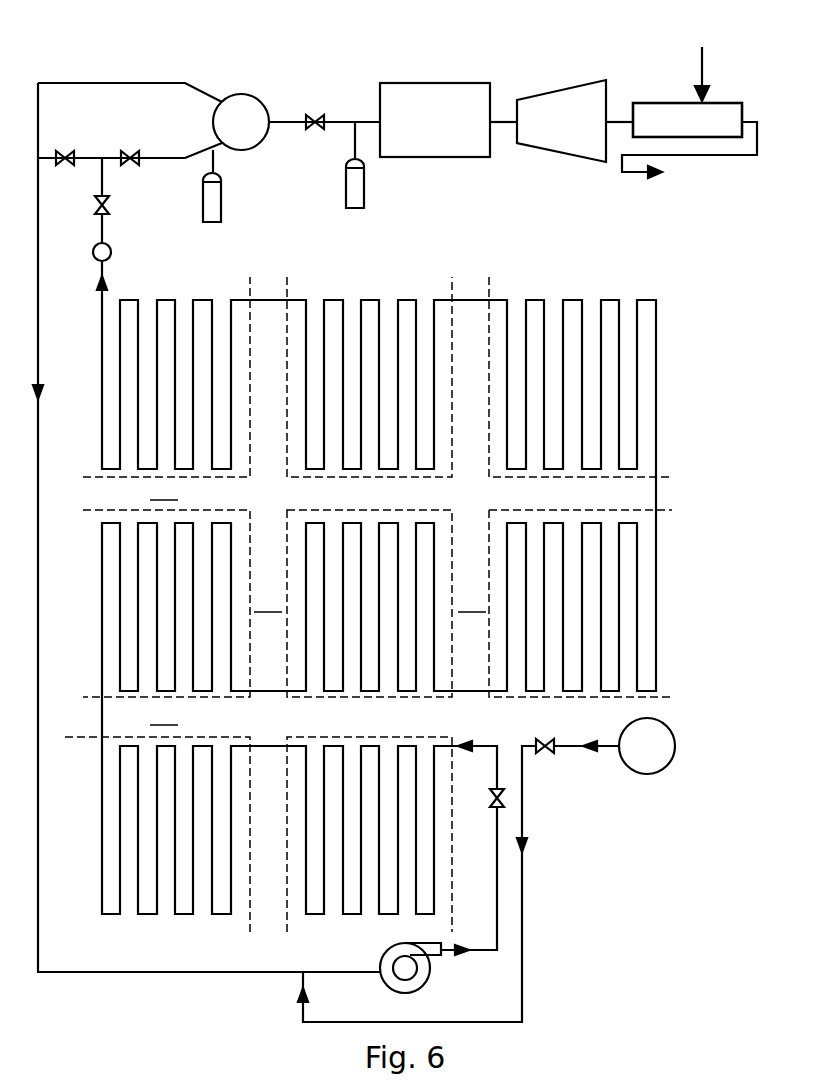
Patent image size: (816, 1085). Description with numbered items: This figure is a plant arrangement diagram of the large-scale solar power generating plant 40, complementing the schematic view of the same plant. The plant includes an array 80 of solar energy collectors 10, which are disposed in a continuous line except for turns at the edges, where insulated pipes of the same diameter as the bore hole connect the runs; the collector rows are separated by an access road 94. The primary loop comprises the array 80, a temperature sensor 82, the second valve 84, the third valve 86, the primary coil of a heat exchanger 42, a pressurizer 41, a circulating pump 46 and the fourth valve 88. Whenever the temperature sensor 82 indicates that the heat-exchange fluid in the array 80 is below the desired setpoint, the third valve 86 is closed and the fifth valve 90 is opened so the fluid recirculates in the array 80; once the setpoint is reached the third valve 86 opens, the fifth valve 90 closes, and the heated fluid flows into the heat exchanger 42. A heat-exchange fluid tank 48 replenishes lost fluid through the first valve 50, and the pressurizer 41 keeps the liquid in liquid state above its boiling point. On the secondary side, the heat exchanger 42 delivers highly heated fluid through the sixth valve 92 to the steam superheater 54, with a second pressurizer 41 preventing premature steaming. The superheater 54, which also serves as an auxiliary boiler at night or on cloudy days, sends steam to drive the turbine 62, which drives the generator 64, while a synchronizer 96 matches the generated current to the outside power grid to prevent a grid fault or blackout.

The solar energy collector 10 is at (379, 588).
The array 80 is at (368, 577).
The access road 94 is at (318, 605).
The fifth valve 90 is at (84, 139).
The third valve 86 is at (149, 139).
The second valve 84 is at (133, 204).
The temperature sensor 82 is at (105, 268).
The heat exchanger 42 is at (260, 100).
The sixth valve 92 is at (302, 147).
The pressurizer 41 is at (297, 186).
The solar power generating plant 40 is at (530, 65).
The steam superheater 54 is at (465, 127).
The turbine 62 is at (592, 107).
The generator 64 is at (702, 121).
The synchronizer 96 is at (695, 63).
The heat-exchange fluid tank 48 is at (648, 766).
The first valve 50 is at (447, 866).
The fourth valve 88 is at (483, 828).
The circulating pump 46 is at (432, 981).